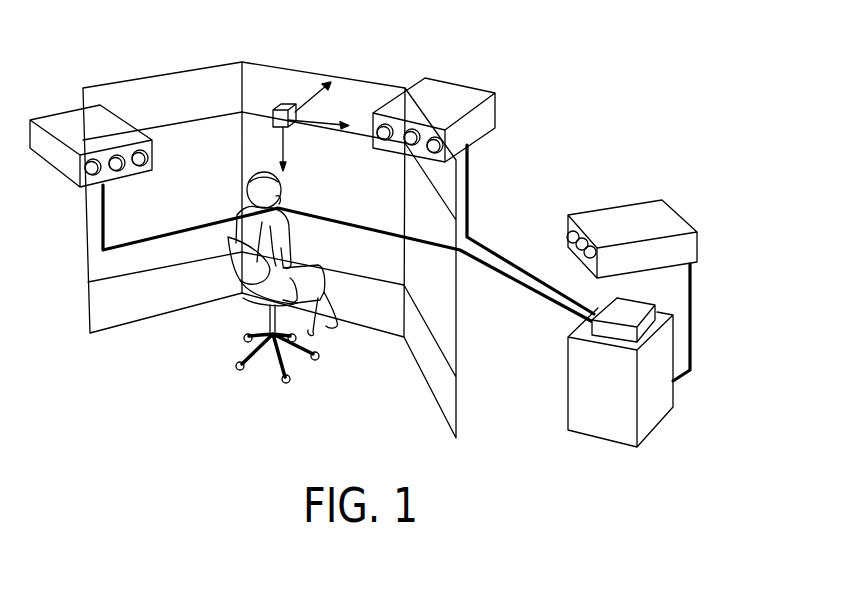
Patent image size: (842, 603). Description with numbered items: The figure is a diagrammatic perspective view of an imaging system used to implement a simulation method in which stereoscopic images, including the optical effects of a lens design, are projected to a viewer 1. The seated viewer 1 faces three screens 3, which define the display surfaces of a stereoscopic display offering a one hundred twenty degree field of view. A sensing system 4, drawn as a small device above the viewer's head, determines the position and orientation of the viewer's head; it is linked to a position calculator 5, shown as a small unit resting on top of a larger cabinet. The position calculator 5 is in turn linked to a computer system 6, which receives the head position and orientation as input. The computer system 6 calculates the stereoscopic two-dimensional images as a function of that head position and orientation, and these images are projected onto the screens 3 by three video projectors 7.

The viewer 1 is at (233, 238).
The screens 3 is at (448, 182).
The sensing system 4 is at (283, 103).
The position calculator 5 is at (653, 317).
The computer system 6 is at (667, 392).
The video projectors 7 is at (665, 222).